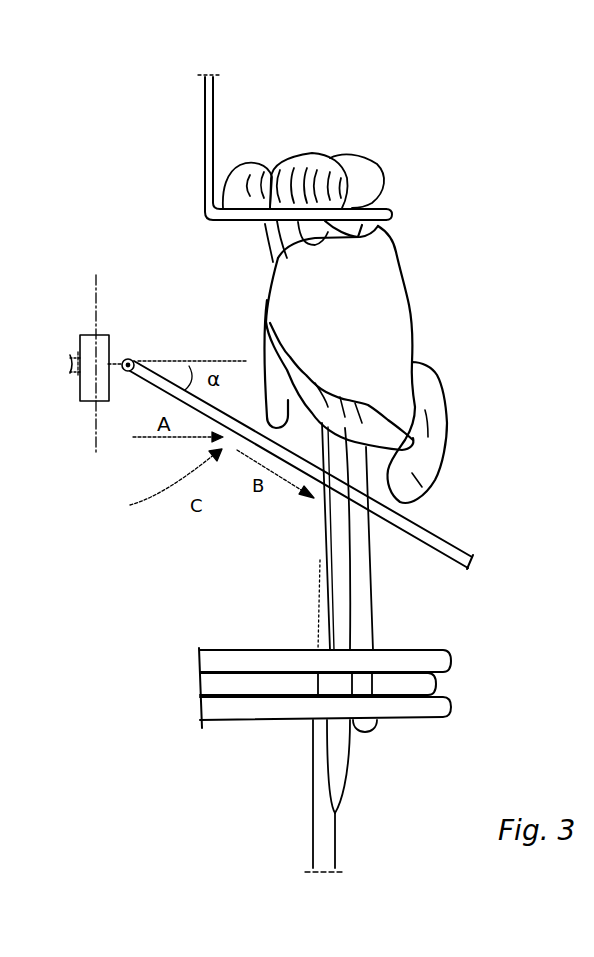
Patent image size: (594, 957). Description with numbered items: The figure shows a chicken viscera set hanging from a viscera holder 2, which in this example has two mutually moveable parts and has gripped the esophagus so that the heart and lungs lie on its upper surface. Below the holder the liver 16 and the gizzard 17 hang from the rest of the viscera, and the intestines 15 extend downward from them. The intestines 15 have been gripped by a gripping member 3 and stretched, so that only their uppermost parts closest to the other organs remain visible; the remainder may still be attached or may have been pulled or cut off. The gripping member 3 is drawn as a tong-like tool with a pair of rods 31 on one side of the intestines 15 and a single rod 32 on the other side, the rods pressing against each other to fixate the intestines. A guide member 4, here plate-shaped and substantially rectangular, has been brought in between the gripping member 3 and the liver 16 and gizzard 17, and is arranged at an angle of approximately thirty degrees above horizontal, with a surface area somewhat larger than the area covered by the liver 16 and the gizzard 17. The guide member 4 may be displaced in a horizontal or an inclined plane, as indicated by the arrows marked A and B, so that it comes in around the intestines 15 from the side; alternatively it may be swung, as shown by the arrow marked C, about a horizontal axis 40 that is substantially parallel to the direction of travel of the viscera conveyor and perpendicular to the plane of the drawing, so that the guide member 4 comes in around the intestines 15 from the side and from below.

The viscera holder 2 is at (198, 130).
The gripping member 3 is at (279, 711).
The guide member 4 is at (476, 572).
The intestines 15 is at (327, 553).
The liver 16 is at (390, 320).
The gizzard 17 is at (450, 390).
The pair of rods 31 is at (230, 708).
The single rod 32 is at (268, 700).
The horizontal axis 40 is at (123, 378).